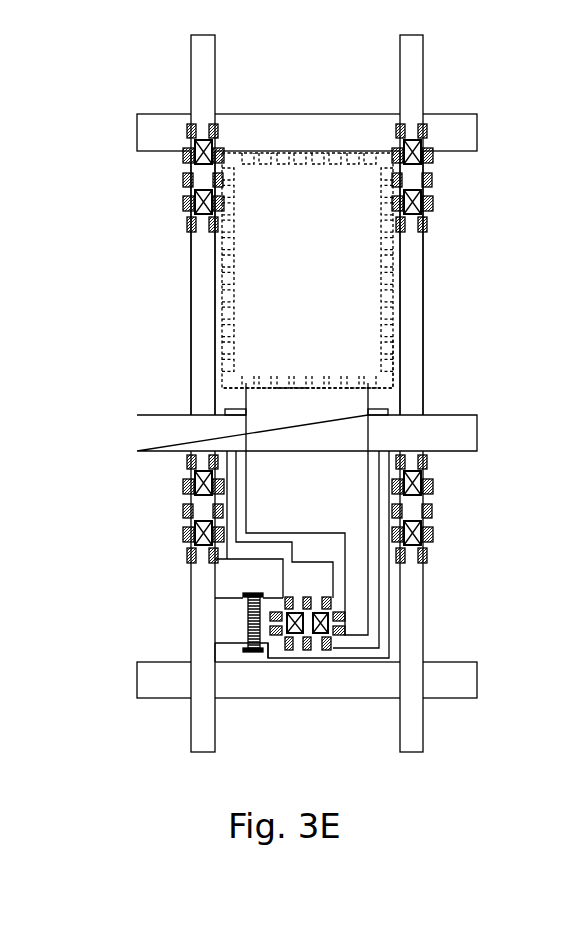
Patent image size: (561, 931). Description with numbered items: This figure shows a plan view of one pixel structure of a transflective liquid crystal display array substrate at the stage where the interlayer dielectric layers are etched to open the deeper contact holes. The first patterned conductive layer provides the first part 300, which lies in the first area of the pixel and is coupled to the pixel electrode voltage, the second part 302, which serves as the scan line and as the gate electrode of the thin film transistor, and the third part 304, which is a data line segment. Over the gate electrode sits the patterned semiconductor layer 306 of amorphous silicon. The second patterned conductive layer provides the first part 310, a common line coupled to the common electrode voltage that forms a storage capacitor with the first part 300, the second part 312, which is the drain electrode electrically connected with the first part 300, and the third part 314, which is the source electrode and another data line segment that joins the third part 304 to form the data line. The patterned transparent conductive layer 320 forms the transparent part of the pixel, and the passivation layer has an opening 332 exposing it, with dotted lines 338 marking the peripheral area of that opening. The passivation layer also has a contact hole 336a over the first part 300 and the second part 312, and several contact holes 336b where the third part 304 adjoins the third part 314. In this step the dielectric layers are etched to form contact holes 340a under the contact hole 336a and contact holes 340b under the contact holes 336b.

The first part of the first patterned conductive layer 300 is at (245, 548).
The second part of the first patterned conductive layer 302 is at (468, 132).
The third part of the first patterned conductive layer 304 is at (192, 275).
The patterned semiconductor layer 306 is at (243, 661).
The first part of the second patterned conductive layer 310 is at (465, 432).
The second part of the second patterned conductive layer 312 is at (259, 655).
The third part of the second patterned conductive layer 314 is at (197, 45).
The patterned transparent conductive layer 320 is at (360, 298).
The opening 332 is at (385, 262).
The contact hole 336a is at (307, 652).
The contact holes 336b is at (179, 179).
The dotted lines 338 is at (398, 353).
The contact holes 340a is at (295, 651).
The contact holes 340b is at (185, 158).